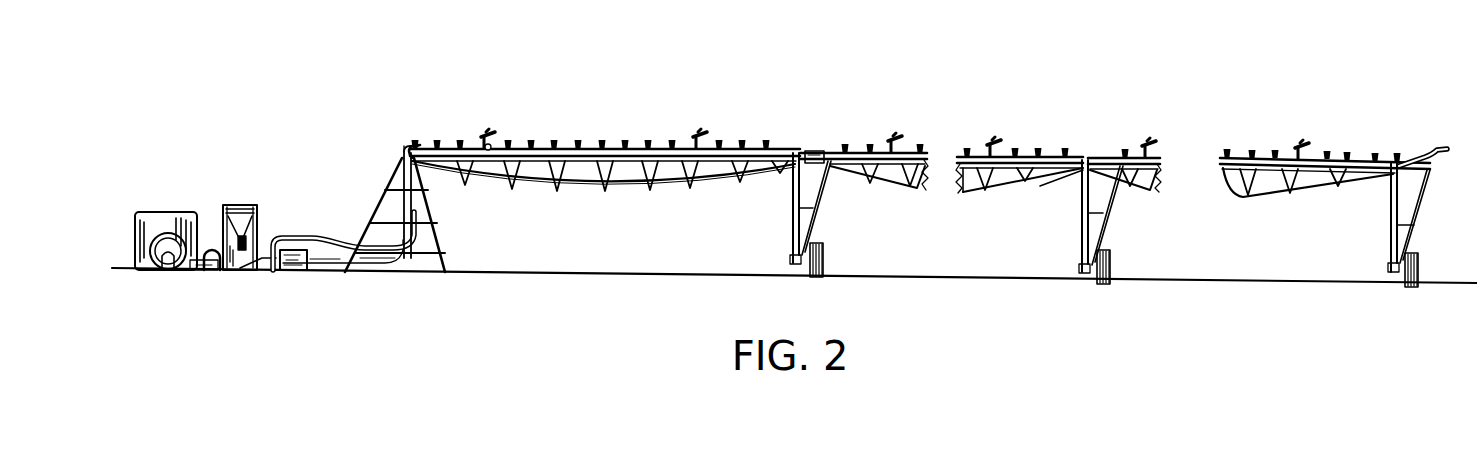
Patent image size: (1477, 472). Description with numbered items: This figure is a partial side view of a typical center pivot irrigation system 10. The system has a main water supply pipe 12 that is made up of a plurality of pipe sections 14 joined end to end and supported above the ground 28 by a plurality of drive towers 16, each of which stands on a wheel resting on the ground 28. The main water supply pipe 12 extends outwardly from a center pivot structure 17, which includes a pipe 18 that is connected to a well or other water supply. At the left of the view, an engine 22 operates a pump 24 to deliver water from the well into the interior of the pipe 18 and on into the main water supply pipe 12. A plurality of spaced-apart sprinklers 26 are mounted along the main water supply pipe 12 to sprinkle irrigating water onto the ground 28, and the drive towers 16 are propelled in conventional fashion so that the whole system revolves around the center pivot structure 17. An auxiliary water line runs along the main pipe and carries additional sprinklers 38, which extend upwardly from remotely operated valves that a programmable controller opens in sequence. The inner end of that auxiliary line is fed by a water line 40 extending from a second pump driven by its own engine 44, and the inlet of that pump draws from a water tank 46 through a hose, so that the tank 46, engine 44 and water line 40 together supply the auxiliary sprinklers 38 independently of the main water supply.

The center pivot irrigation system 10 is at (639, 118).
The main water supply pipe 12 is at (770, 140).
The pipe sections 14 is at (563, 150).
The drive towers 16 is at (824, 227).
The center pivot structure 17 is at (437, 218).
The pipe 18 is at (397, 203).
The engine 22 is at (152, 222).
The pump 24 is at (167, 232).
The sprinklers 26 is at (437, 138).
The ground 28 is at (613, 273).
The sprinkler 38 is at (494, 126).
The water line 40 is at (335, 242).
The engine 44 is at (300, 273).
The water tank 46 is at (264, 216).